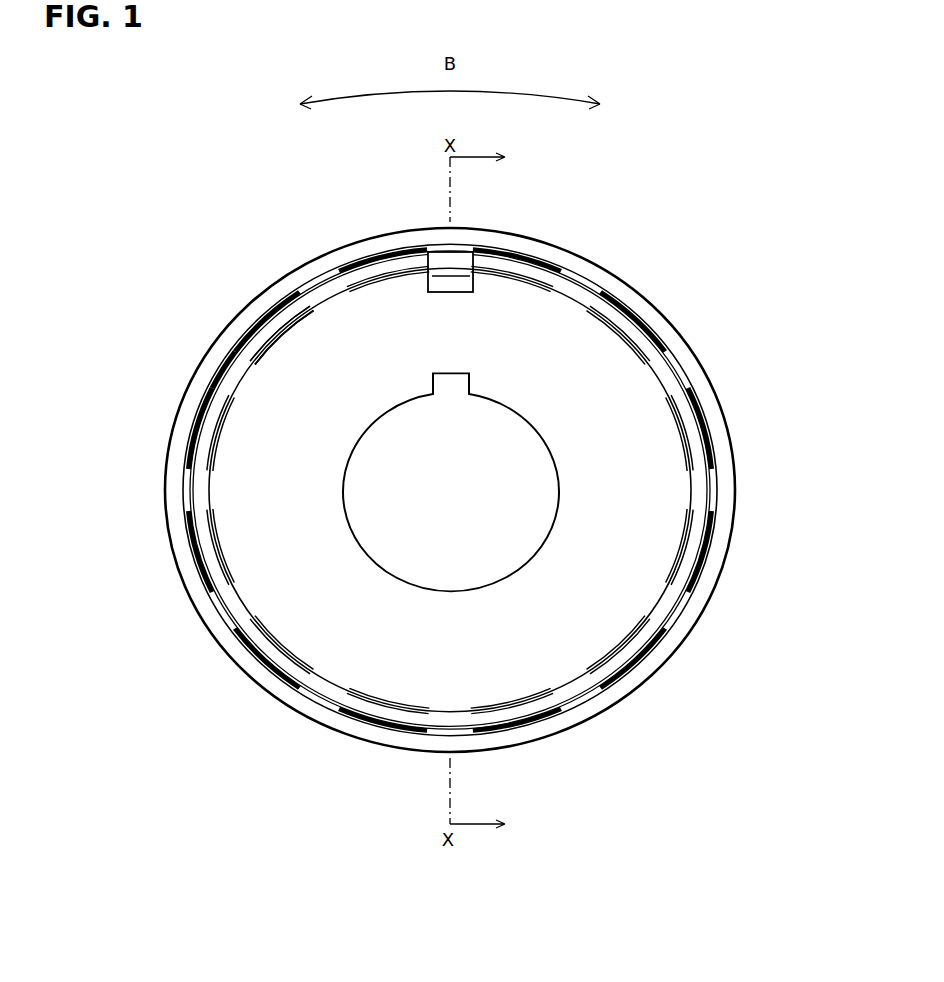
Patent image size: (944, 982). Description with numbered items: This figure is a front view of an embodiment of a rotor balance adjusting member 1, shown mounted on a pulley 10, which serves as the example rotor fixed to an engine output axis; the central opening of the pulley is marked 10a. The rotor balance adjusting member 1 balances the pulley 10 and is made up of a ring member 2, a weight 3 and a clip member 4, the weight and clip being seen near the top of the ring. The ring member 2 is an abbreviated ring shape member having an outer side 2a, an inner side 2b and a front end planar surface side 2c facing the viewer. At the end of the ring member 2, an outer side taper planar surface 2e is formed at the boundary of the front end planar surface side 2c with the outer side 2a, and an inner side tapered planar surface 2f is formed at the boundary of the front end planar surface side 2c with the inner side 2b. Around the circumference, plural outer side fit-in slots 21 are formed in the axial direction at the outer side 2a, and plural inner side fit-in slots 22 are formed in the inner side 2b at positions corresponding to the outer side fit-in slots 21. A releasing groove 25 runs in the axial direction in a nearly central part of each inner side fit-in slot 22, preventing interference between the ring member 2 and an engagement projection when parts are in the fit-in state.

The rotor balance adjusting member 1 is at (356, 190).
The ring member 2 is at (390, 262).
The outer side 2a is at (262, 313).
The inner side 2b is at (287, 336).
The front end planar surface side 2c is at (292, 302).
The outer side taper planar surface 2e is at (242, 330).
The inner side tapered planar surface 2f is at (295, 318).
The weight 3 is at (432, 277).
The clip member 4 is at (433, 258).
The pulley 10 is at (503, 231).
The bore 10a is at (573, 492).
The outer side fit-in slot 21 is at (331, 275).
The inner side fit-in slot 22 is at (348, 291).
The releasing groove 25 is at (345, 300).